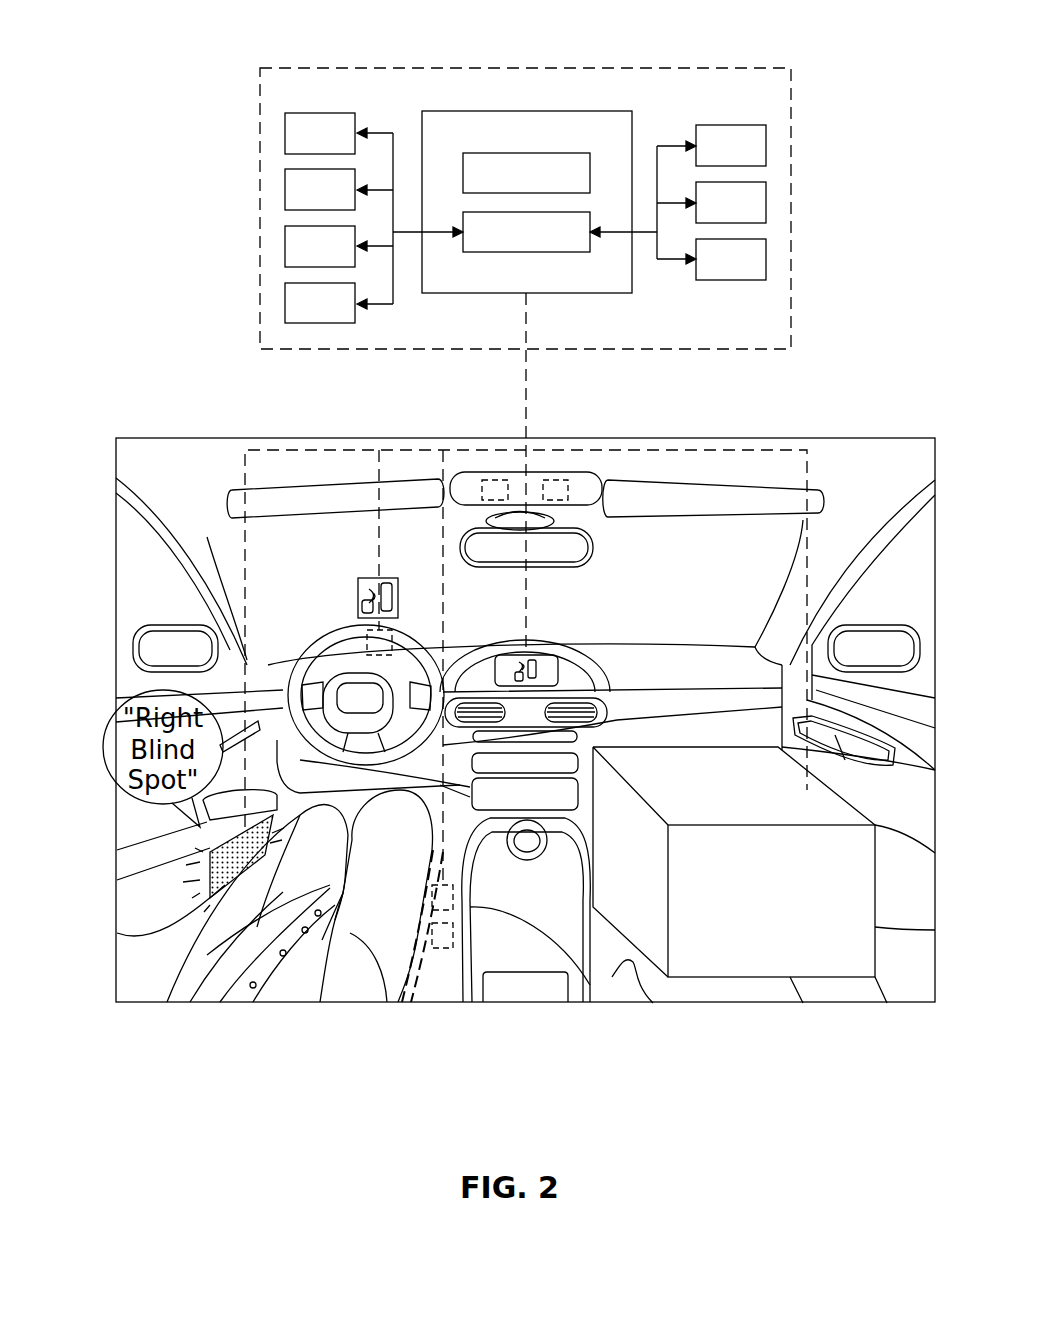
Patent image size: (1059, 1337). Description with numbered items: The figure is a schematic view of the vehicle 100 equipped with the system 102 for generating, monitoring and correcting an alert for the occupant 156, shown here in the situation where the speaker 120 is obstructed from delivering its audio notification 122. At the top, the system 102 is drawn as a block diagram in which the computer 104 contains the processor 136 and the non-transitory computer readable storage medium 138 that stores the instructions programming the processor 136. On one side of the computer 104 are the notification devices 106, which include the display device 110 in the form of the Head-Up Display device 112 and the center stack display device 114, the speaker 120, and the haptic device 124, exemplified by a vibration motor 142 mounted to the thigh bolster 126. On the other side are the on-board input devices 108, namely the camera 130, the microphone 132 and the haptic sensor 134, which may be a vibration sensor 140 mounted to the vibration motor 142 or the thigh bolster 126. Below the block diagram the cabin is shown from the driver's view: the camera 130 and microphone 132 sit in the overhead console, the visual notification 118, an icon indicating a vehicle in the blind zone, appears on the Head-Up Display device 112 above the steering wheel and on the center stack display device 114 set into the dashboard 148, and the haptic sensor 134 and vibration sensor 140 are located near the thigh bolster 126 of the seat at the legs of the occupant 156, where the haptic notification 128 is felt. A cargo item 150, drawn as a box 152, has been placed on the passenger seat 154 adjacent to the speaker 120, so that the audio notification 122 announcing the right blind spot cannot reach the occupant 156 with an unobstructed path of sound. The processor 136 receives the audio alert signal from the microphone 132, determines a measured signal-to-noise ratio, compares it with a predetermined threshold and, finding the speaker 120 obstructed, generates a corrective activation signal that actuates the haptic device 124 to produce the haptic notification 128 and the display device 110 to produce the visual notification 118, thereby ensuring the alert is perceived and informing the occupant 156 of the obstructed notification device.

The vehicle 100 is at (170, 418).
The system 102 is at (297, 67).
The computer 104 is at (526, 111).
The processor 136 is at (525, 153).
The non-transitory computer readable storage medium 138 is at (525, 252).
The notification devices 106 is at (502, 607).
The display device 110 is at (405, 389).
The Head-Up Display device 112 is at (285, 133).
The center stack display device 114 is at (285, 190).
The speaker 120 is at (285, 246).
The haptic device 124 is at (285, 304).
The vibration motor 142 is at (470, 900).
The haptic sensor 134 is at (767, 259).
The vibration sensor 140 is at (458, 950).
The on-board input devices 108 is at (654, 301).
The camera 130 is at (767, 145).
The microphone 132 is at (767, 202).
The visual notification 118 is at (386, 580).
The audio notification 122 is at (190, 690).
The thigh bolster 126 is at (453, 990).
The haptic notification 128 is at (378, 985).
The dashboard 148 is at (490, 679).
The cargo item 150 is at (740, 908).
The box 152 is at (748, 1003).
The passenger seat 154 is at (653, 1003).
The occupant 156 is at (193, 1003).